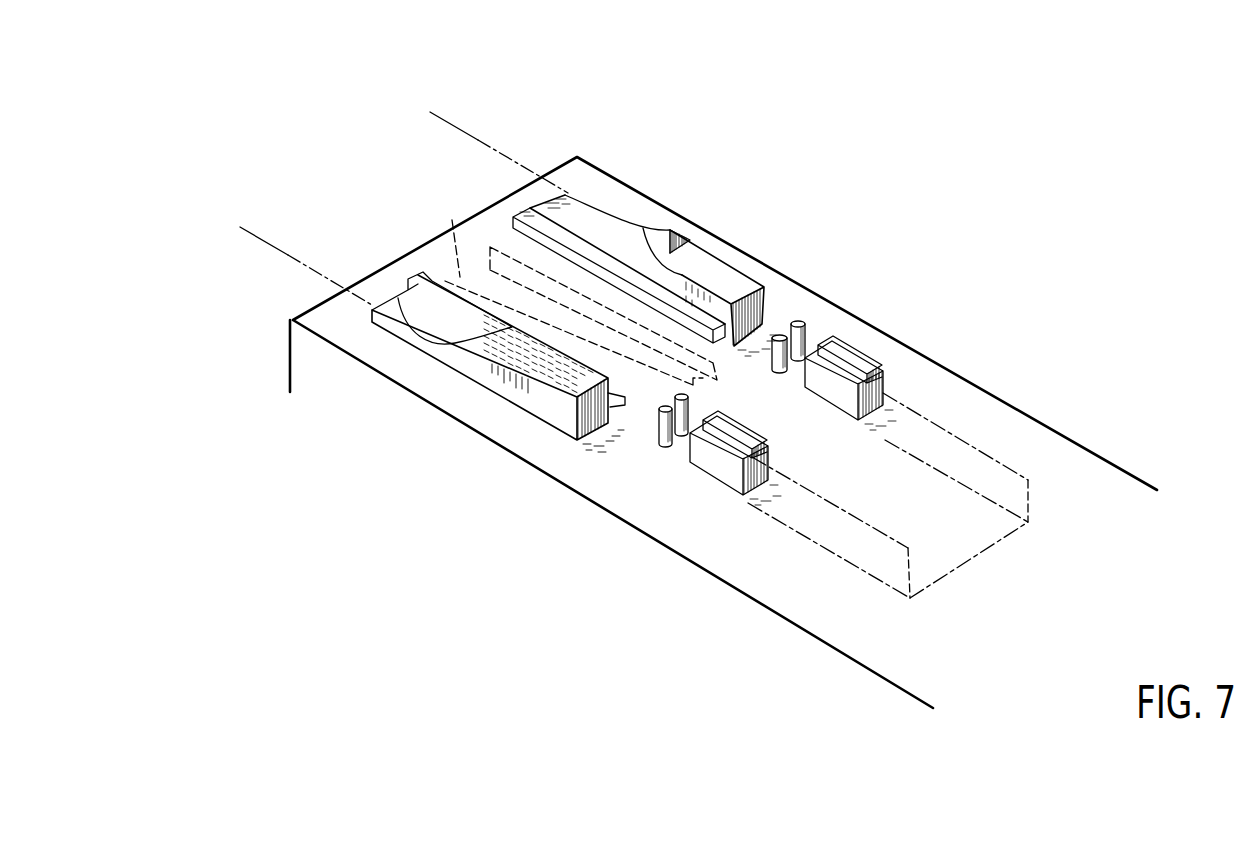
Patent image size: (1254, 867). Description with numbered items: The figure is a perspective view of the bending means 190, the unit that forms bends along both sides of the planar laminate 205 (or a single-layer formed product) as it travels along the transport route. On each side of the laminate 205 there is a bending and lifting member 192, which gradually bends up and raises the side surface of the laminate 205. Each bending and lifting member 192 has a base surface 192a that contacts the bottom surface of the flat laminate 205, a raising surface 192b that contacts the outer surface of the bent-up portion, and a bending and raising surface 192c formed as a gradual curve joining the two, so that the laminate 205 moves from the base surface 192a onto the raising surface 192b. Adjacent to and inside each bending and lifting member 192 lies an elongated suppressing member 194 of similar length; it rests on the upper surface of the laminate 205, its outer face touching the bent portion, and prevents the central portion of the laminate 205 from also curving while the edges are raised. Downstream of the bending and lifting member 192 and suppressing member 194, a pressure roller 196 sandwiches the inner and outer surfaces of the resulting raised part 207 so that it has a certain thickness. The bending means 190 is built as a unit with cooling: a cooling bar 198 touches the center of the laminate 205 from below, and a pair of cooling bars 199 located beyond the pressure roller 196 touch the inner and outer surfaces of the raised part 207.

The bending means 190 is at (816, 110).
The bending and lifting member 192 is at (731, 263).
The base surface 192a is at (574, 197).
The raising surface 192b is at (705, 303).
The bending and raising surface 192c is at (634, 240).
The suppressing member 194 is at (520, 213).
The pressure roller 196 is at (800, 323).
The cooling bar 198 is at (452, 220).
The cooling bars 199 is at (863, 358).
The laminate 205 is at (302, 262).
The raised part 207 is at (947, 453).